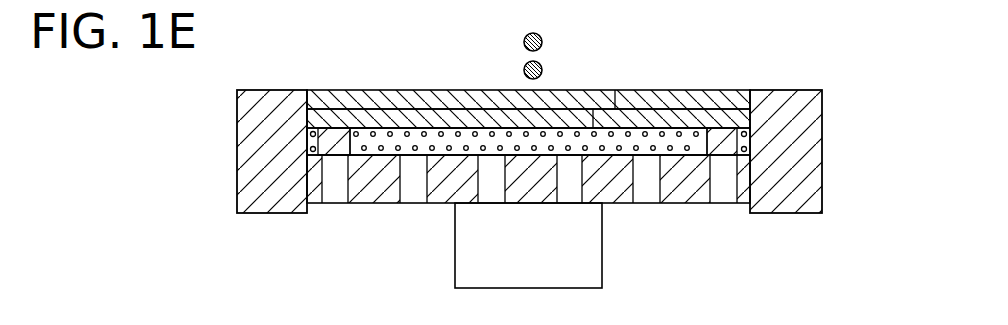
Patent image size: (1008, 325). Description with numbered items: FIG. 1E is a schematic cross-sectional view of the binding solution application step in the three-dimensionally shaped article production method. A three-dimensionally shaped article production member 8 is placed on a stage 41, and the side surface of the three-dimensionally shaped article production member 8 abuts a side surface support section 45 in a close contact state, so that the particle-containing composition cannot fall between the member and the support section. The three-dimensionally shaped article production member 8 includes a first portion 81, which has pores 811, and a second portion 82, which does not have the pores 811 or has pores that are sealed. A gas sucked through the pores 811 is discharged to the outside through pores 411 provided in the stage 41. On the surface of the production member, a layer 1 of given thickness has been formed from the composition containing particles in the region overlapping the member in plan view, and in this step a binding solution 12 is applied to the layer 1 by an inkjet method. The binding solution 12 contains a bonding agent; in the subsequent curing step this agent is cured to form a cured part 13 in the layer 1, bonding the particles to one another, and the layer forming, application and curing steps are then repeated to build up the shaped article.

The layer 1 is at (650, 90).
The binding solution 12 is at (543, 67).
The cured part 13 is at (503, 112).
The three-dimensionally shaped article production member 8 is at (525, 95).
The first portion 81 is at (528, 96).
The pores 811 is at (420, 129).
The second portion 82 is at (327, 127).
The stage 41 is at (528, 216).
The pores 411 is at (347, 204).
The side surface support section 45 is at (836, 94).